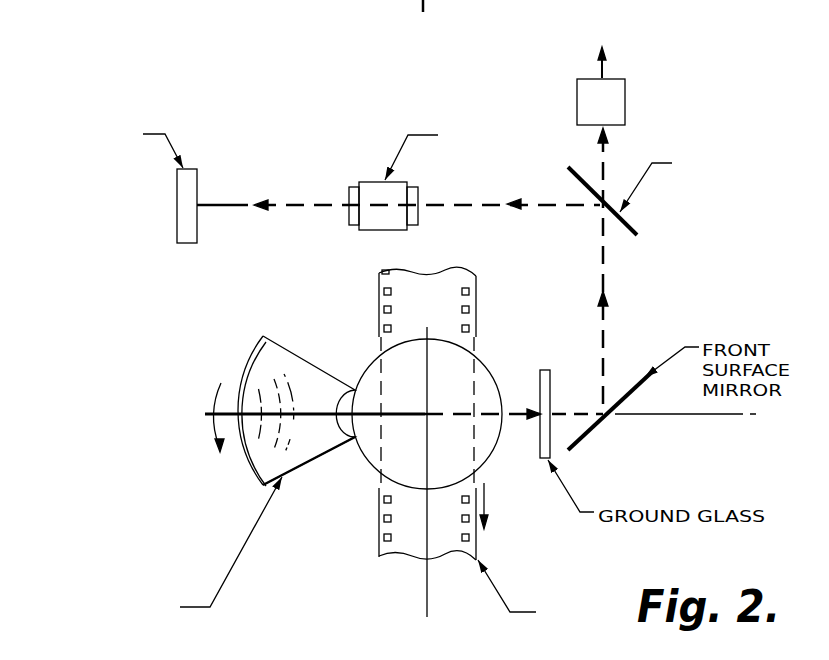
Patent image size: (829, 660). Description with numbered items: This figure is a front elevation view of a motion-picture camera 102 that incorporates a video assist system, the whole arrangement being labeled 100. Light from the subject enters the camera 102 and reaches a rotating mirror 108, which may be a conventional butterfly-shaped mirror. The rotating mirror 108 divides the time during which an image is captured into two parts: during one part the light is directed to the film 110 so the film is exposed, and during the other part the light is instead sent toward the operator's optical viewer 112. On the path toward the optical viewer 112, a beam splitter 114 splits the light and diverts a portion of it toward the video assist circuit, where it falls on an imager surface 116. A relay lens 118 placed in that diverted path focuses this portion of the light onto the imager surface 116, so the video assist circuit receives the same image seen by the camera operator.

The camera system 100 is at (484, 4).
The motion-picture camera 102 is at (170, 92).
The rotating mirror 108 is at (315, 458).
The film 110 is at (478, 299).
The optical viewer 112 is at (606, 62).
The beam splitter 114 is at (634, 228).
The imager surface 116 is at (197, 231).
The relay lens 118 is at (395, 230).